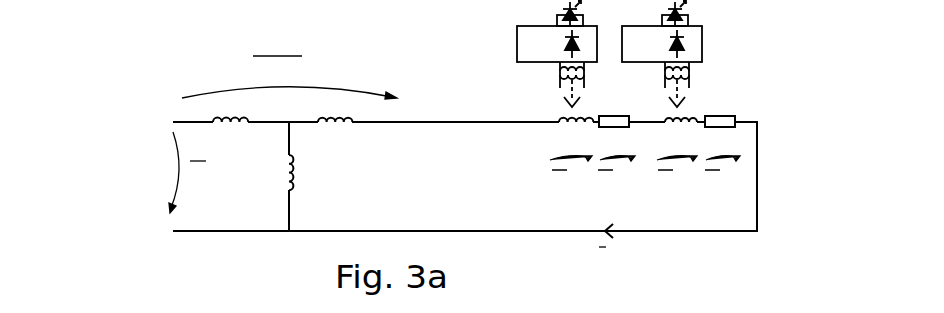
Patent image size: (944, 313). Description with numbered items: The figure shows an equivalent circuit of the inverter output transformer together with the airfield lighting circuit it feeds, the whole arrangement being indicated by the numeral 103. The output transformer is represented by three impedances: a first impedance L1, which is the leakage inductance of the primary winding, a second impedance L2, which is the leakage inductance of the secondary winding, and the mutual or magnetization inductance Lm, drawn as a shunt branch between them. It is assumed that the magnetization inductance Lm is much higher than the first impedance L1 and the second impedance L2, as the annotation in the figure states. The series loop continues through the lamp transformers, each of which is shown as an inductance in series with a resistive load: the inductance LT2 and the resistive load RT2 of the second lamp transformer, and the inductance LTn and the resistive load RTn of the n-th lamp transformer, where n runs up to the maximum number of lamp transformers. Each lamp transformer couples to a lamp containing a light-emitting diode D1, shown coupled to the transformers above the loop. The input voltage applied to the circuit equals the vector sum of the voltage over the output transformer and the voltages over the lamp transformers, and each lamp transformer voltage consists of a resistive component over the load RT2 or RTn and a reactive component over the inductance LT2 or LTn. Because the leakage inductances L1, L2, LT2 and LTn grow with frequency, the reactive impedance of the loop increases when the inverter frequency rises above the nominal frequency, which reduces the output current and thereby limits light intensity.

The equivalent circuit of resonant converter 103 is at (174, 72).
The leakage inductance of the primary winding L1 is at (230, 135).
The leakage inductance of the secondary winding L2 is at (335, 135).
The magnetization inductance Lm is at (383, 172).
The inductance of lamp transformer T2 LT2 is at (572, 136).
The resistive load at lamp transformer T2 RT2 is at (615, 135).
The inductance of lamp transformer Tn LTn is at (679, 136).
The resistive load at lamp transformer Tn RTn is at (723, 135).
The LED in a lamp D1 is at (609, 54).